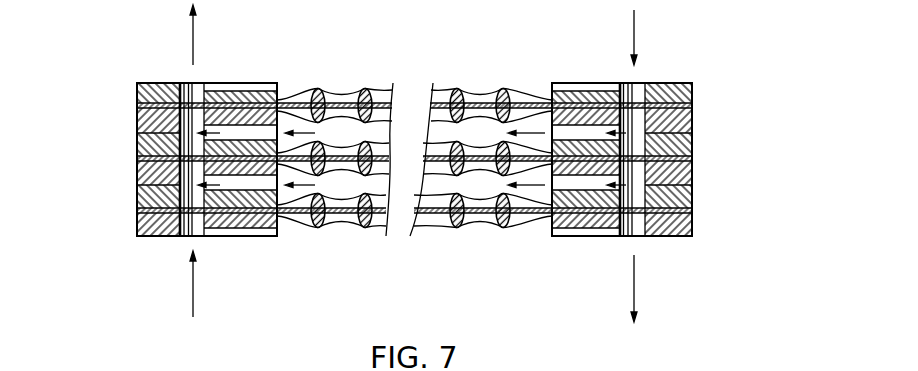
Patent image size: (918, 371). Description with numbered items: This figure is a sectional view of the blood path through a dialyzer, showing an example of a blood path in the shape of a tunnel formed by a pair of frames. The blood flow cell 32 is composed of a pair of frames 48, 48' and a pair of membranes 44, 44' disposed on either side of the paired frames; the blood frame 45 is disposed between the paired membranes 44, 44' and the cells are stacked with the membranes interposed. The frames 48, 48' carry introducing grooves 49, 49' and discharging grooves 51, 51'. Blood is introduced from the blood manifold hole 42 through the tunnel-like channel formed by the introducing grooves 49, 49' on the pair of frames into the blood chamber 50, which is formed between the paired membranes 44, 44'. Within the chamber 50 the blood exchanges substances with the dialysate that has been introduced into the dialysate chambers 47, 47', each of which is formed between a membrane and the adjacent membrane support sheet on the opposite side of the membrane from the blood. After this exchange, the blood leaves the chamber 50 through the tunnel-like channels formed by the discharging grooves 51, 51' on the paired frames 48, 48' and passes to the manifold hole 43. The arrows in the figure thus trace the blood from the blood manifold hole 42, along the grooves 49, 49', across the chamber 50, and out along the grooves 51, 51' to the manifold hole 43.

The blood flow cell 32 is at (781, 58).
The blood manifold hole 42 is at (638, 90).
The manifold hole 43 is at (199, 88).
The membrane 44 is at (459, 92).
The membrane 44' is at (462, 122).
The blood frame 45 is at (740, 105).
The dialysate chamber 47 is at (480, 85).
The dialysate chamber 47' is at (491, 90).
The frame 48 is at (690, 120).
The frame 48' is at (693, 143).
The introducing groove 49 is at (589, 135).
The introducing groove 49' is at (589, 139).
The blood chamber 50 is at (436, 130).
The discharging groove 51 is at (240, 140).
The discharging groove 51' is at (263, 145).